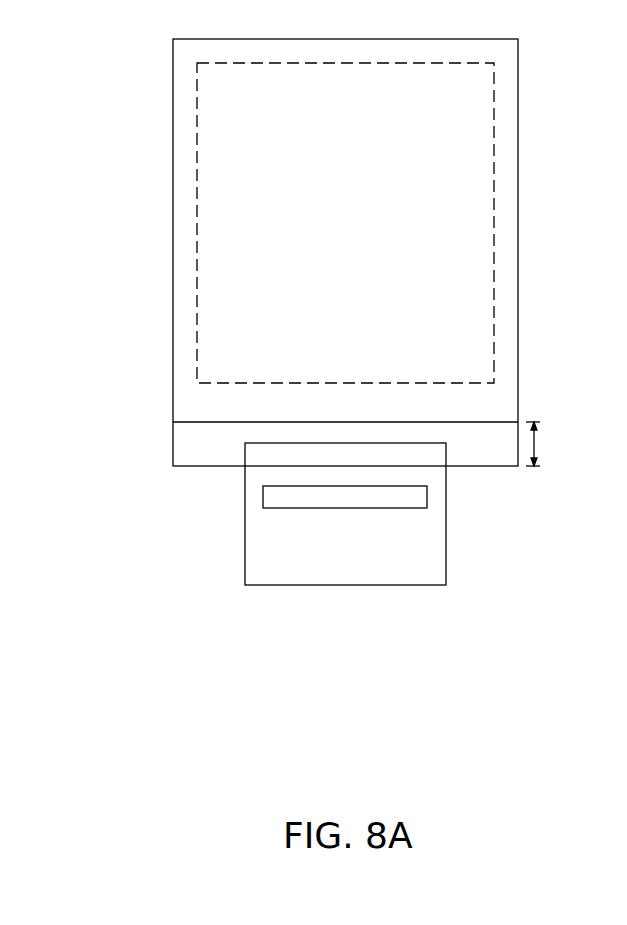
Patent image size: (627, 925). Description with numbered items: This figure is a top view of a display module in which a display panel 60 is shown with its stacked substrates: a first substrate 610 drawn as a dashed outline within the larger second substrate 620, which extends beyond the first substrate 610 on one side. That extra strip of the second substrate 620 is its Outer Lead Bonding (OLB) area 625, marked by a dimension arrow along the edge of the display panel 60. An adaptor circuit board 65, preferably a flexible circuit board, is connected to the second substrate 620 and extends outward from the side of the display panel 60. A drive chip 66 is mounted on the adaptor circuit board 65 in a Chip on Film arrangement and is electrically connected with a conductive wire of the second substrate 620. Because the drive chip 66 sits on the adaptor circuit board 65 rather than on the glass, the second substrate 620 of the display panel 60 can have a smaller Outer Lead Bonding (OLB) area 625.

The display panel 60 is at (173, 74).
The first substrate 610 is at (185, 405).
The second substrate 620 is at (185, 449).
The Outer Lead Bonding (OLB) area 625 is at (553, 444).
The adaptor circuit board 65 is at (262, 553).
The drive chip 66 is at (277, 495).